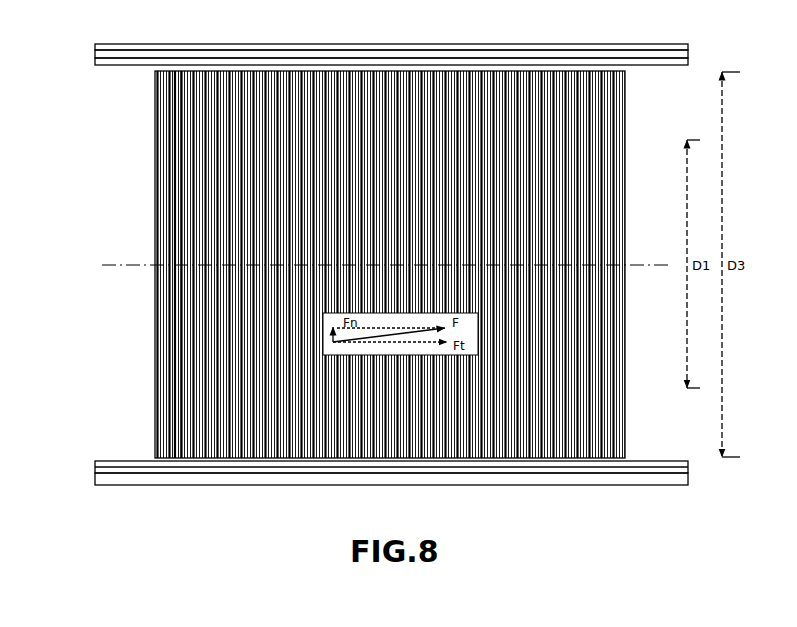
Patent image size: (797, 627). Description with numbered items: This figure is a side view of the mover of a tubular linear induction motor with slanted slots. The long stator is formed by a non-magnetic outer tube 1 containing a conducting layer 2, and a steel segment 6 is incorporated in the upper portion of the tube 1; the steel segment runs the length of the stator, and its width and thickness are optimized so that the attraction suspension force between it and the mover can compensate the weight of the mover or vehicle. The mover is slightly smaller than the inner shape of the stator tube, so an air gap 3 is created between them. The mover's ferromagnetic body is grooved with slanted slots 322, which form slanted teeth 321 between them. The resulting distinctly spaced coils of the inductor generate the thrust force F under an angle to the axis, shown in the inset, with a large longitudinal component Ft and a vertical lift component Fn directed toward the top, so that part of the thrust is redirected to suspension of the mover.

The non-magnetic outer tube 1 is at (95, 46).
The conducting layer 2 is at (95, 61).
The air gap 3 is at (155, 71).
The steel segment 6 is at (95, 53).
The slanted teeth 321 is at (181, 160).
The slanted slots 322 is at (176, 122).